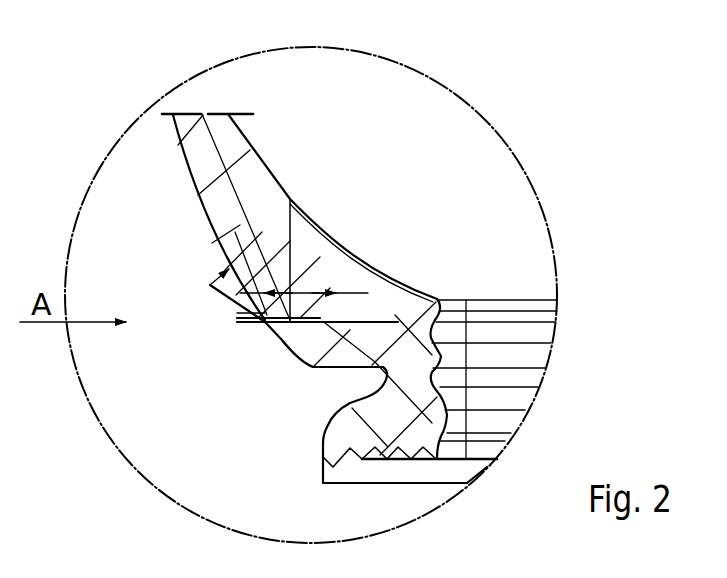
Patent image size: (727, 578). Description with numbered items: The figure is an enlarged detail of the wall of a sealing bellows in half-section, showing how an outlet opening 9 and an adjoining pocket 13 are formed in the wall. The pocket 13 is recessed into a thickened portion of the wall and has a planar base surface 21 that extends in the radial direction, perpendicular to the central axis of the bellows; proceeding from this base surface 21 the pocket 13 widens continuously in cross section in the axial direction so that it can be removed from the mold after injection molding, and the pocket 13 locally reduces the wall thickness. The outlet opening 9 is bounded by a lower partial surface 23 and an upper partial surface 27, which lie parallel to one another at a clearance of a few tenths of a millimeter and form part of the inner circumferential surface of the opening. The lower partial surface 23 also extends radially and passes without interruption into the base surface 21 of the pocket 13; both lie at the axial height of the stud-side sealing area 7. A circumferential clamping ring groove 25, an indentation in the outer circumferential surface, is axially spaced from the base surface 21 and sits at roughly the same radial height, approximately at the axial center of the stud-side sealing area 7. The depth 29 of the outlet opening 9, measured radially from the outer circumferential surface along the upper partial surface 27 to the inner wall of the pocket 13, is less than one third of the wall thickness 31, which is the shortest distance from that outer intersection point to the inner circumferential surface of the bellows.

The stud-side sealing area 7 is at (480, 380).
The outlet opening 9 is at (262, 327).
The pocket 13 is at (323, 268).
The base surface 21 is at (388, 319).
The lower partial surface 23 is at (260, 322).
The clamping ring groove 25 is at (324, 398).
The upper partial surface 27 is at (283, 342).
The depth 29 is at (304, 279).
The wall thickness 31 is at (275, 199).